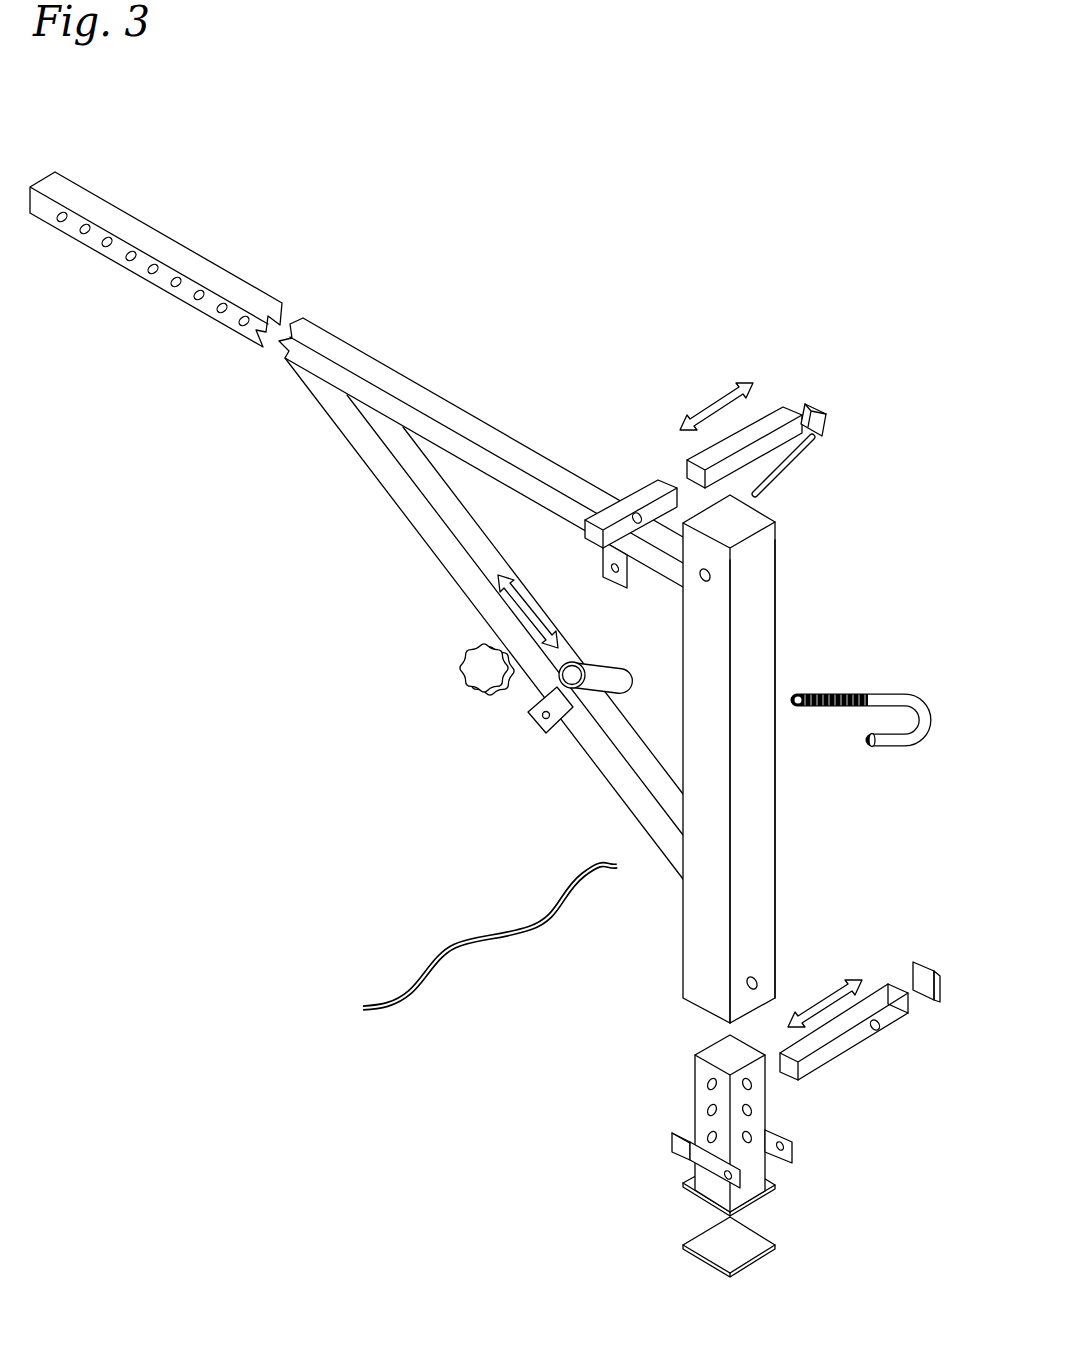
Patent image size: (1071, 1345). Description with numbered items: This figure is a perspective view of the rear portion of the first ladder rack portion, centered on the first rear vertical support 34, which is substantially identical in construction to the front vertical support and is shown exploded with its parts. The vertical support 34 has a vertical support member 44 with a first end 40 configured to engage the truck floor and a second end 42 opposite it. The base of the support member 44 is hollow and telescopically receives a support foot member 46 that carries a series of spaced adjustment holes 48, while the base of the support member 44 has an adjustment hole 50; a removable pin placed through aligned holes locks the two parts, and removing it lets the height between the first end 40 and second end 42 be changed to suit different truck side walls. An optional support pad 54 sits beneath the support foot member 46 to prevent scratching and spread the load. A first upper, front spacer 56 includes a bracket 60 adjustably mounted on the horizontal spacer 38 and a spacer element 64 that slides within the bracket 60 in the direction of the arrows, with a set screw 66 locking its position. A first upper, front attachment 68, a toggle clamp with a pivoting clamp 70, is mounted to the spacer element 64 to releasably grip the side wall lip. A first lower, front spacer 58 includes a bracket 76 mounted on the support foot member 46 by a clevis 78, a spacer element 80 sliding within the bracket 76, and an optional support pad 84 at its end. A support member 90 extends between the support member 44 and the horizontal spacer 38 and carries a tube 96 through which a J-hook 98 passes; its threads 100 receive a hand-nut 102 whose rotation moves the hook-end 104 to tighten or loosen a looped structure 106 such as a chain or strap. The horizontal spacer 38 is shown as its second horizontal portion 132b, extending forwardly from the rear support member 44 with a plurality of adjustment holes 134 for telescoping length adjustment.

The first rear vertical support 34 is at (787, 743).
The first horizontal spacer 38 is at (356, 379).
The first end 40 is at (718, 1163).
The second end 42 is at (775, 508).
The vertical support member 44 is at (762, 828).
The support foot member 46 is at (693, 1062).
The adjustment holes 48 is at (752, 1085).
The adjustment hole 50 is at (754, 978).
The support pad 54 is at (697, 1260).
The first upper, front spacer 56 is at (592, 476).
The first lower, front spacer 58 is at (865, 1050).
The bracket 60 is at (650, 487).
The spacer element 64 is at (776, 418).
The set screw 66 is at (606, 505).
The first upper, front attachment 68 is at (785, 404).
The pivoting clamp 70 is at (823, 432).
The bracket 76 is at (683, 1127).
The clevis 78 is at (790, 1135).
The spacer element 80 is at (862, 1046).
The support pad 84 is at (917, 960).
The support member 90 is at (484, 618).
The tube 96 is at (602, 672).
The J-hook 98 is at (864, 701).
The threads 100 is at (820, 690).
The hand-nut 102 is at (458, 672).
The hook-end 104 is at (917, 742).
The looped structure 106 is at (563, 902).
The second horizontal portion 132b is at (156, 259).
The adjustment holes 134 is at (105, 247).